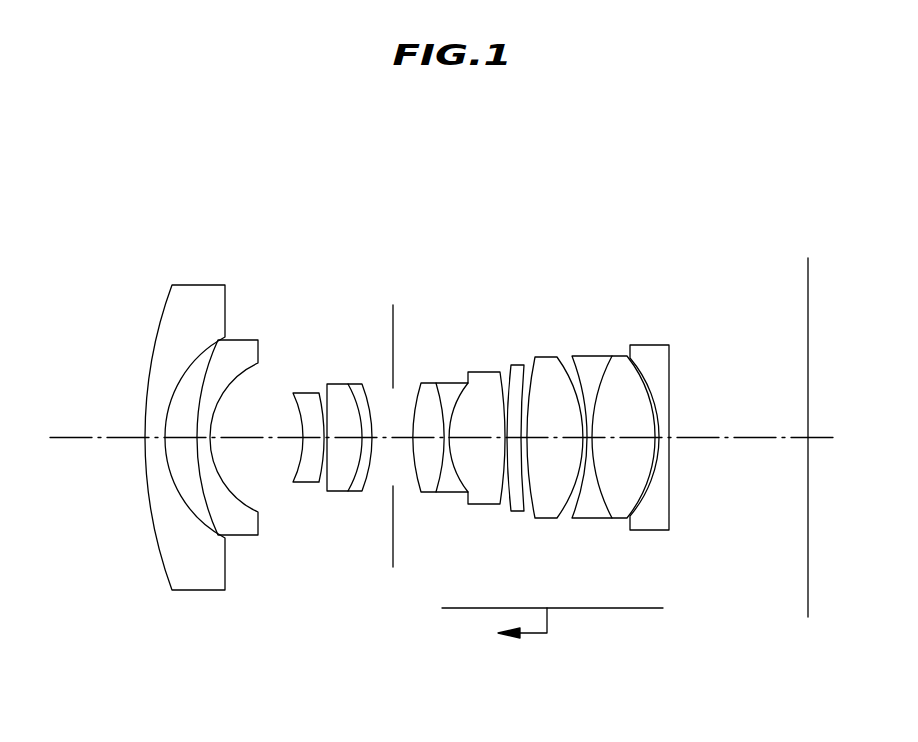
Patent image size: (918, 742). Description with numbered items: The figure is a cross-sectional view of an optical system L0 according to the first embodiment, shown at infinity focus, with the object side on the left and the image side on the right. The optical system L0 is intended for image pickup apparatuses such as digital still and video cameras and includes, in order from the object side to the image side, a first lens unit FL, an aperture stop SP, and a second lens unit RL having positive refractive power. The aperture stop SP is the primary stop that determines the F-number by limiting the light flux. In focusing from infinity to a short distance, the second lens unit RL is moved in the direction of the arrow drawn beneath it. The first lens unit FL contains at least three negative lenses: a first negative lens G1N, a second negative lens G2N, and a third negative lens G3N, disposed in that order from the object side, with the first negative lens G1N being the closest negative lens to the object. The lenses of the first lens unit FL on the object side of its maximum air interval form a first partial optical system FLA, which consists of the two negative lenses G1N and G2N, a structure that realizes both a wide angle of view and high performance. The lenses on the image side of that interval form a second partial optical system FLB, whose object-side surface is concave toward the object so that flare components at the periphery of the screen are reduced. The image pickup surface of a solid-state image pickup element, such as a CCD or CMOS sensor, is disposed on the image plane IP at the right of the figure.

The optical system L0 is at (690, 195).
The first lens unit FL is at (375, 242).
The second lens unit RL is at (690, 242).
The first partial optical system FLA is at (272, 675).
The second partial optical system FLB is at (360, 675).
The first negative lens G1N is at (198, 590).
The second negative lens G2N is at (248, 536).
The third negative lens G3N is at (312, 483).
The aperture stop SP is at (393, 330).
The image plane IP is at (808, 318).